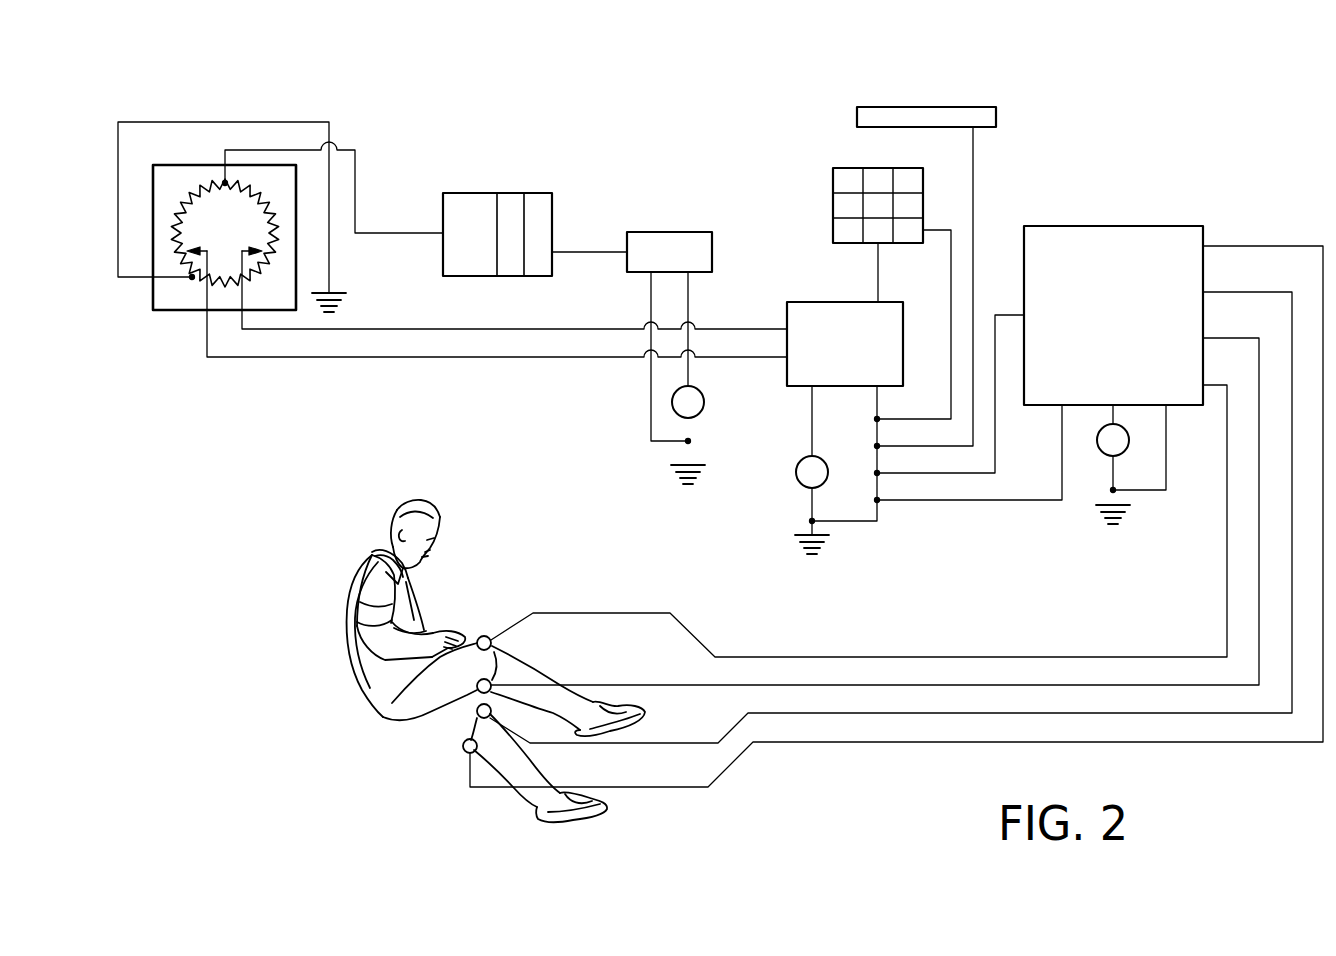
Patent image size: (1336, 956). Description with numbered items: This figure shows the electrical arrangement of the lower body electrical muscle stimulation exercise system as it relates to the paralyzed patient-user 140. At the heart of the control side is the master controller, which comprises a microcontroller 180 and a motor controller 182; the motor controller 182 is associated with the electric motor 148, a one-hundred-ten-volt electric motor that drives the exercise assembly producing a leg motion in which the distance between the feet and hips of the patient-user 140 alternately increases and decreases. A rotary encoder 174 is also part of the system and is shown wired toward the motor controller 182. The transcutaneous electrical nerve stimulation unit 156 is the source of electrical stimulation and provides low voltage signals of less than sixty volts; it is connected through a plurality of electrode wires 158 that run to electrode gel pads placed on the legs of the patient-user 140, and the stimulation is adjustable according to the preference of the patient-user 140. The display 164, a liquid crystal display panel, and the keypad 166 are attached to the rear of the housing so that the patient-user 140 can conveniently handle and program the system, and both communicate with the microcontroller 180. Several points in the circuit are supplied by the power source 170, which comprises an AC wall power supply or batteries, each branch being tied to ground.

The patient-user 140 is at (352, 572).
The electric motor 148 is at (472, 193).
The transcutaneous electrical nerve stimulation unit 156 is at (1160, 226).
The electrode wires 158 is at (600, 612).
The display 164 is at (930, 107).
The keypad 166 is at (832, 183).
The power source 170 is at (705, 402).
The rotary encoder 174 is at (170, 312).
The microcontroller 180 is at (810, 302).
The motor controller 182 is at (668, 232).